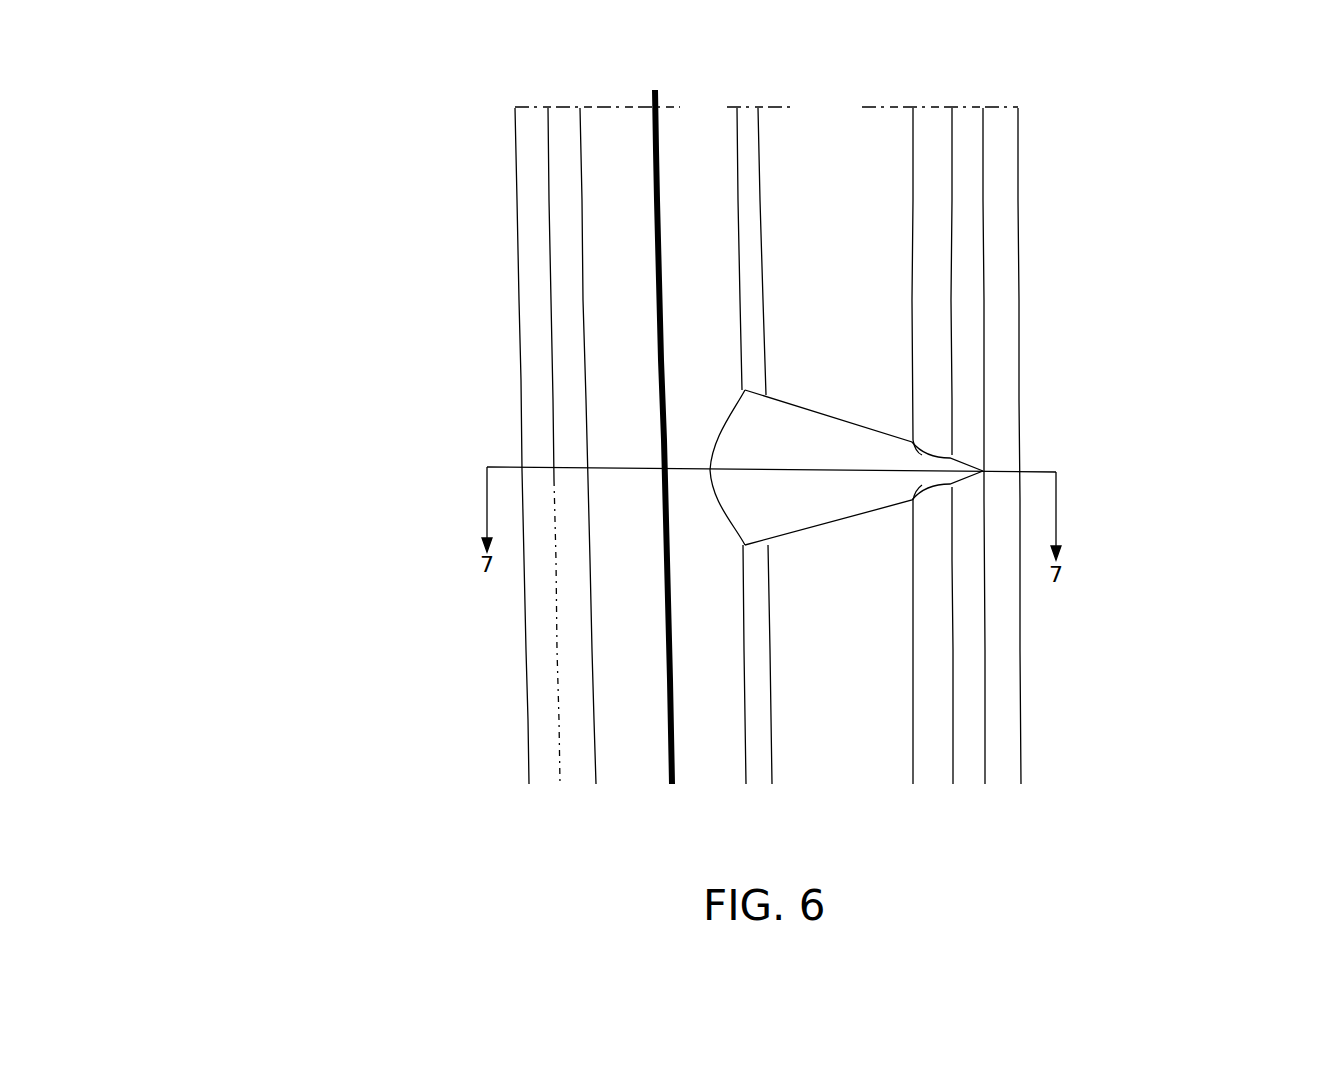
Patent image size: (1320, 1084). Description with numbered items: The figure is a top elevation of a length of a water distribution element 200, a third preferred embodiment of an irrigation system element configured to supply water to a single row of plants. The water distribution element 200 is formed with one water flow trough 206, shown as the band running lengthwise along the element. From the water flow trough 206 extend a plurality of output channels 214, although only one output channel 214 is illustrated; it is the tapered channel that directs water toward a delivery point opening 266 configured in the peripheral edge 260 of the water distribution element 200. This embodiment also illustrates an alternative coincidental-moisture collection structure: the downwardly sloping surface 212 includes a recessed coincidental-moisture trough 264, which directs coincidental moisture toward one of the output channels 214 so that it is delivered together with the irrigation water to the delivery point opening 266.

The water distribution element 200 is at (262, 143).
The water flow trough 206 is at (615, 248).
The downwardly sloping surface 212 is at (828, 252).
The output channel 214 is at (805, 505).
The peripheral edge 260 is at (993, 383).
The coincidental-moisture trough 264 is at (933, 312).
The delivery point opening 266 is at (983, 473).